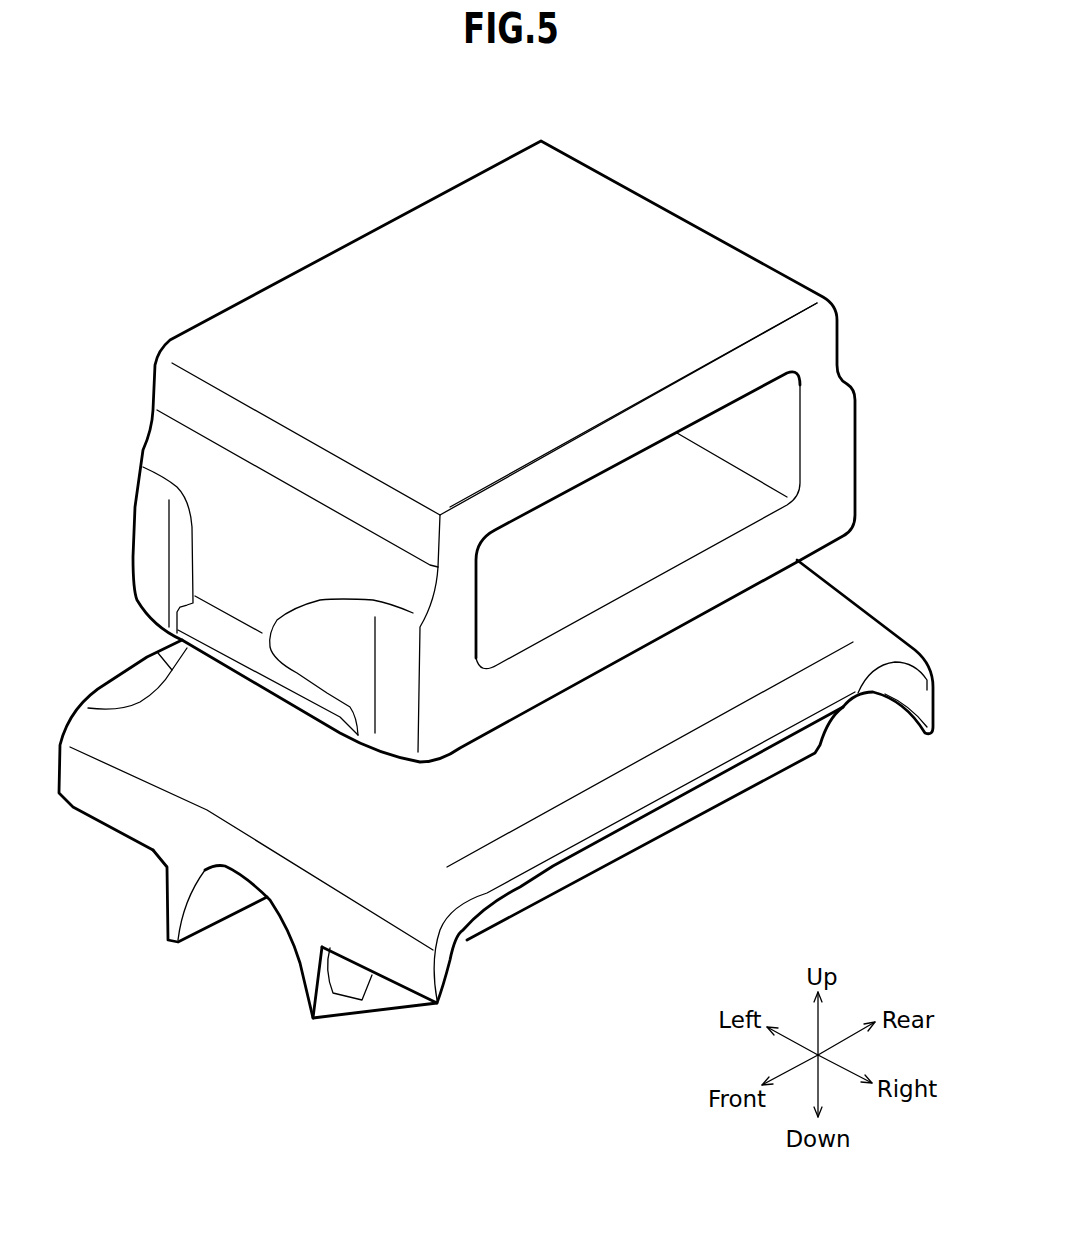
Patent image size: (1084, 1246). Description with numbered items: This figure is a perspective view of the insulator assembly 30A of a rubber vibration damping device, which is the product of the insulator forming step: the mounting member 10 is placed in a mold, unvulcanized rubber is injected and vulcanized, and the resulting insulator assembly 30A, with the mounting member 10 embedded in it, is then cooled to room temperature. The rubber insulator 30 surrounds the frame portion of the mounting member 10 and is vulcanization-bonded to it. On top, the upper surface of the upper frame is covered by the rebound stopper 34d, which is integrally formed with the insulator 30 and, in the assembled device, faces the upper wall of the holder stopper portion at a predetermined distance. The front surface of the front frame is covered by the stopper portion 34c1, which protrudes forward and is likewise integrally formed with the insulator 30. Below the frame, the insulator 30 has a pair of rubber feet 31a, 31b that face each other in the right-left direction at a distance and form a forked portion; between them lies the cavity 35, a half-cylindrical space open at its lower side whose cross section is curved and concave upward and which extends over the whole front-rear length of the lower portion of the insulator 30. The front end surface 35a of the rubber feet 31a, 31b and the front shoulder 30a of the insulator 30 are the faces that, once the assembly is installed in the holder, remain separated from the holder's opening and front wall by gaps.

The mounting member 10 is at (753, 283).
The insulator 30 is at (840, 582).
The insulator assembly 30A is at (242, 250).
The front shoulder 30a is at (207, 810).
The left rubber foot 31a is at (163, 652).
The right rubber foot 31b is at (540, 777).
The stopper portion 34c1 is at (228, 587).
The rebound stopper 34d is at (580, 212).
The cavity 35 is at (250, 967).
The front end surface 35a is at (180, 887).